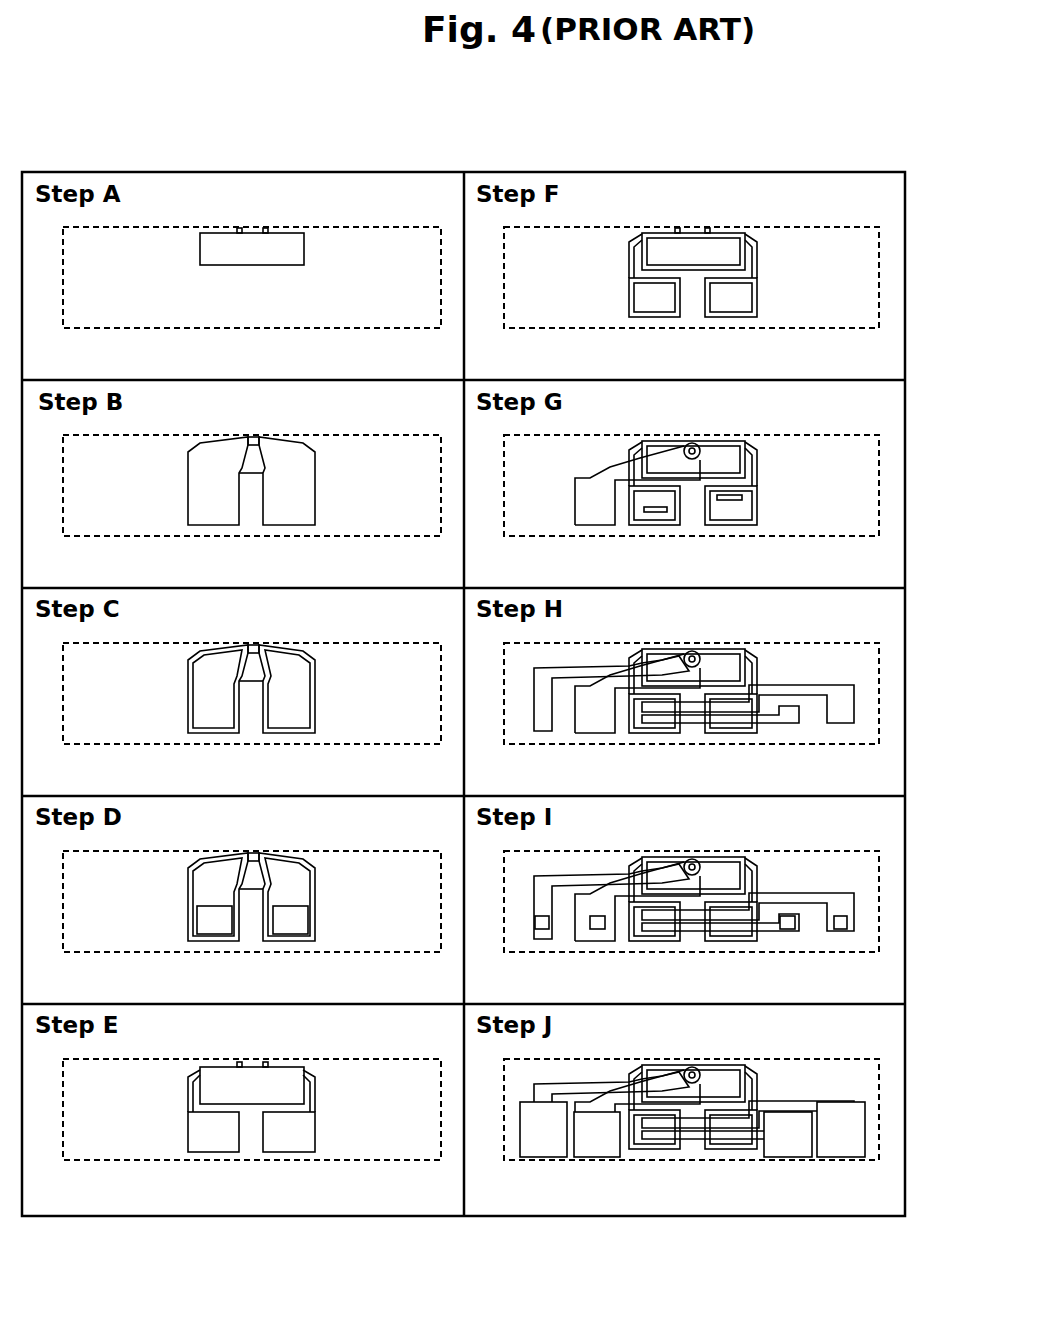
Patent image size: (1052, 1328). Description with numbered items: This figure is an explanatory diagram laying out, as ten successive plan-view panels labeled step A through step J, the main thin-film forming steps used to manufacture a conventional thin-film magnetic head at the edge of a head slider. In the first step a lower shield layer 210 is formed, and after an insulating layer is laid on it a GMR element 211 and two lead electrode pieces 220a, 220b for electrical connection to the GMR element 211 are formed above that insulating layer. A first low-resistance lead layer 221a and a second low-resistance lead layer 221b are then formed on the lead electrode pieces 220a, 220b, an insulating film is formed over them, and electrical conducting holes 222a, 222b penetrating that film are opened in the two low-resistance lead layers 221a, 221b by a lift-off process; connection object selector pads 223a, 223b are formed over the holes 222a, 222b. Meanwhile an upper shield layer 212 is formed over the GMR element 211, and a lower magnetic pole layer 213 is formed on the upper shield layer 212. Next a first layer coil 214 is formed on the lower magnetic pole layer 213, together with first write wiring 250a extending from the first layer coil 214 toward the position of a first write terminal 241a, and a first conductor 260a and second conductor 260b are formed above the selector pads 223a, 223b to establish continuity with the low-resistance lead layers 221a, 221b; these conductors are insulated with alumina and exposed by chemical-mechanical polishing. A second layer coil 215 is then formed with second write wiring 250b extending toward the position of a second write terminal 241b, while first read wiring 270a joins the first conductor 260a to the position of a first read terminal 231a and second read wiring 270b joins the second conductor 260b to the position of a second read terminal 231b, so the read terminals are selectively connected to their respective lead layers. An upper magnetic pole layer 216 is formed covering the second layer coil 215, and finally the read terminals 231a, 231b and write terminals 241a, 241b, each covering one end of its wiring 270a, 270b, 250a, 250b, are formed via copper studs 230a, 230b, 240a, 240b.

The lower shield layer 210 is at (250, 233).
The GMR element 211 is at (250, 437).
The upper shield layer 212 is at (252, 1067).
The lower magnetic pole layer 213 is at (692, 233).
The first layer coil 214 is at (709, 460).
The second layer coil 215 is at (709, 655).
The upper magnetic pole layer 216 is at (691, 863).
The lead electrode piece 220a is at (290, 497).
The lead electrode piece 220b is at (222, 498).
The first low-resistance lead layer 221a is at (295, 716).
The second low-resistance lead layer 221b is at (217, 716).
The electrical conducting hole 222a is at (293, 923).
The electrical conducting hole 222b is at (212, 923).
The connection object selector pad 223a is at (295, 1137).
The connection object selector pad 223b is at (217, 1137).
The copper stud 230a is at (842, 931).
The copper stud 230b is at (787, 931).
The first read terminal 231a is at (849, 1144).
The second read terminal 231b is at (792, 1144).
The copper stud 240a is at (597, 931).
The copper stud 240b is at (540, 931).
The first write terminal 241a is at (600, 1144).
The second write terminal 241b is at (540, 1144).
The first write wiring 250a is at (604, 480).
The second write wiring 250b is at (585, 666).
The first conductor 260a is at (729, 507).
The second conductor 260b is at (655, 522).
The first read wiring 270a is at (842, 716).
The second read wiring 270b is at (787, 716).